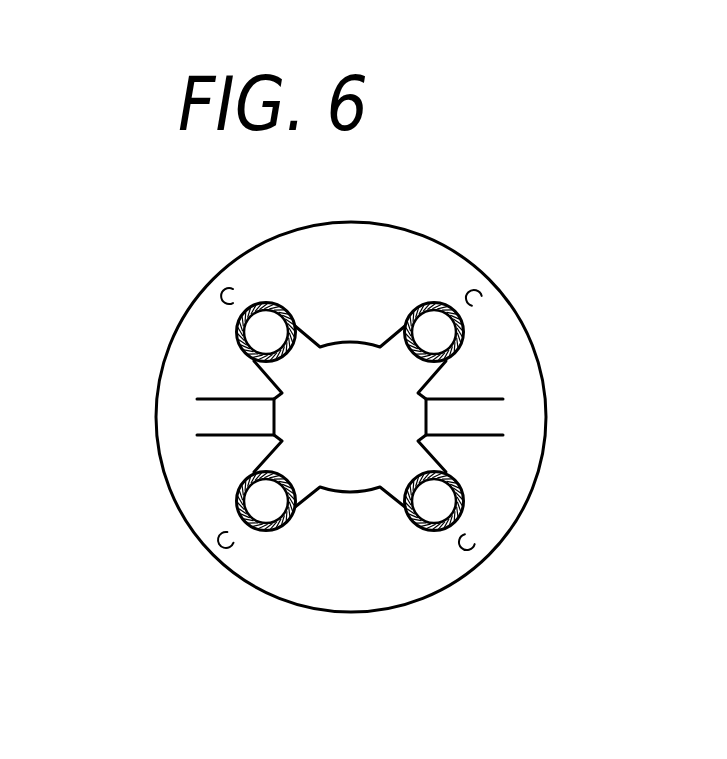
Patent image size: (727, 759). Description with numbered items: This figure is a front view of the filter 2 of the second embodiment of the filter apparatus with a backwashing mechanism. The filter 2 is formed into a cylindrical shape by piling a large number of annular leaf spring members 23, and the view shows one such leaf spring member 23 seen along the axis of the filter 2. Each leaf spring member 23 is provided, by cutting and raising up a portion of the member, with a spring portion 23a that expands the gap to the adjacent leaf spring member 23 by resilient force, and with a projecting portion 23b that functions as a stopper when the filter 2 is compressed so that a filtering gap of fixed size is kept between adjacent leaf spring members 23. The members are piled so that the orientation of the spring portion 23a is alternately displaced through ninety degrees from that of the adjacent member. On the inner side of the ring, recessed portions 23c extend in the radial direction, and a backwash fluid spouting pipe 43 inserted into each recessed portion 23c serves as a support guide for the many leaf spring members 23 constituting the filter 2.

The filter 2 is at (484, 262).
The leaf spring member 23 is at (398, 225).
The spring portion 23a is at (257, 418).
The projecting portion 23b is at (223, 288).
The recessed portion 23c is at (268, 316).
The backwash fluid spouting pipe 43 is at (236, 335).